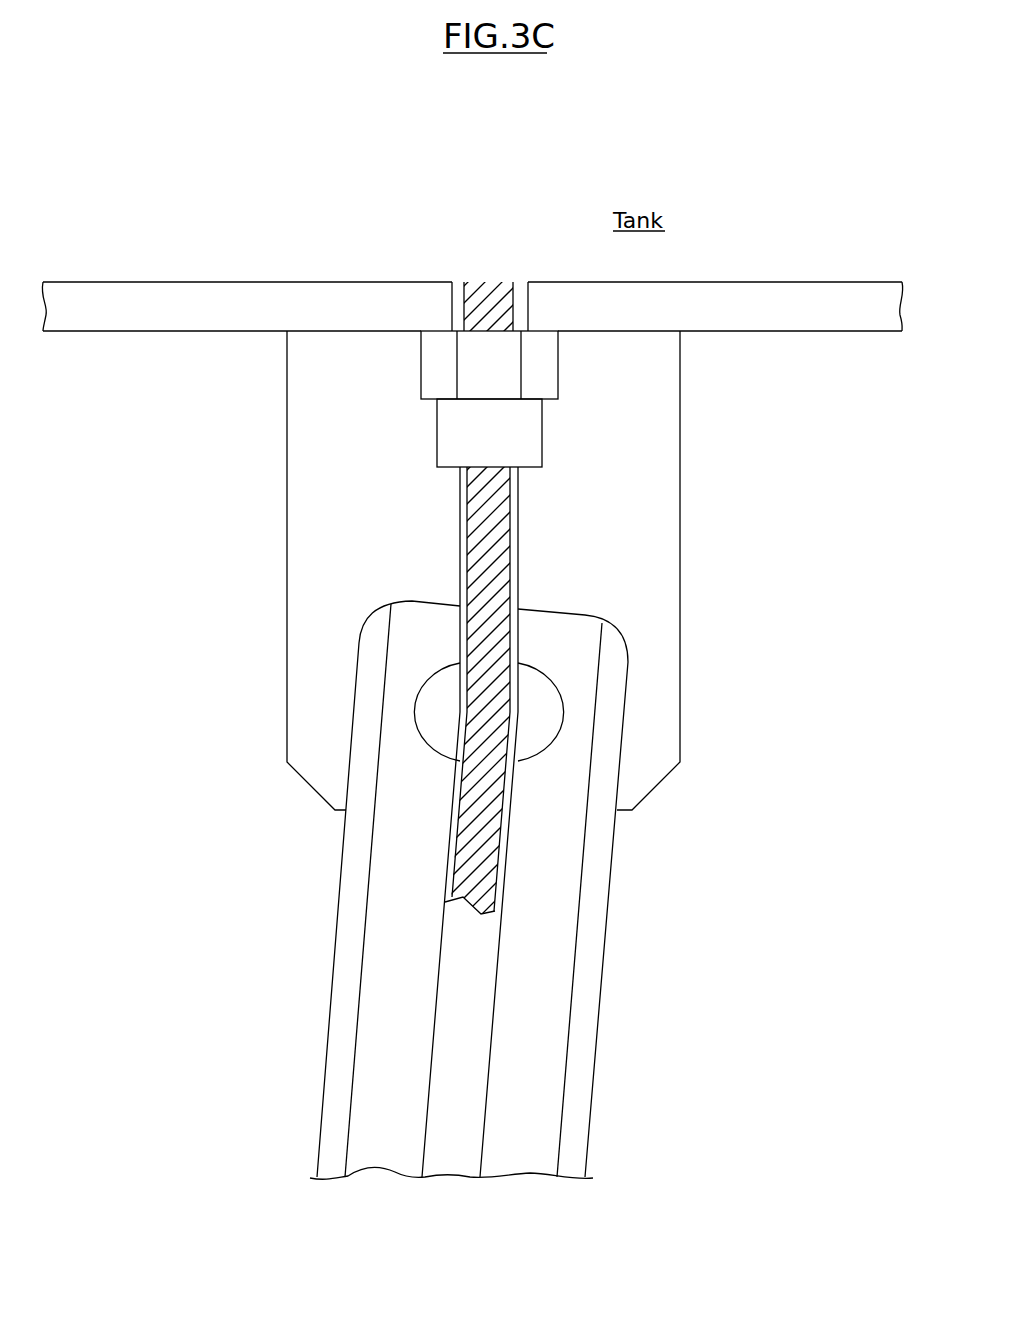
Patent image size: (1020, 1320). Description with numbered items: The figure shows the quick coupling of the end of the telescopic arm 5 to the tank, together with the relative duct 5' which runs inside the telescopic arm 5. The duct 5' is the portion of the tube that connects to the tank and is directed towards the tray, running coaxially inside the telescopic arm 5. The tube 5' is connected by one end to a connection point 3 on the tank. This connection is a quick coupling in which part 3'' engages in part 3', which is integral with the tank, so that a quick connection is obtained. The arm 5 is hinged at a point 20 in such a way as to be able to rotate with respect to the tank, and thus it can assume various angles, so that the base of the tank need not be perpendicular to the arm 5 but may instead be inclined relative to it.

The connection point 3 is at (361, 343).
The part integral with the tank 3' is at (367, 378).
The engaging part of the quick coupling 3'' is at (353, 444).
The duct 5' is at (510, 713).
The hinge point 20 is at (533, 717).
The telescopic arm 5 is at (506, 890).